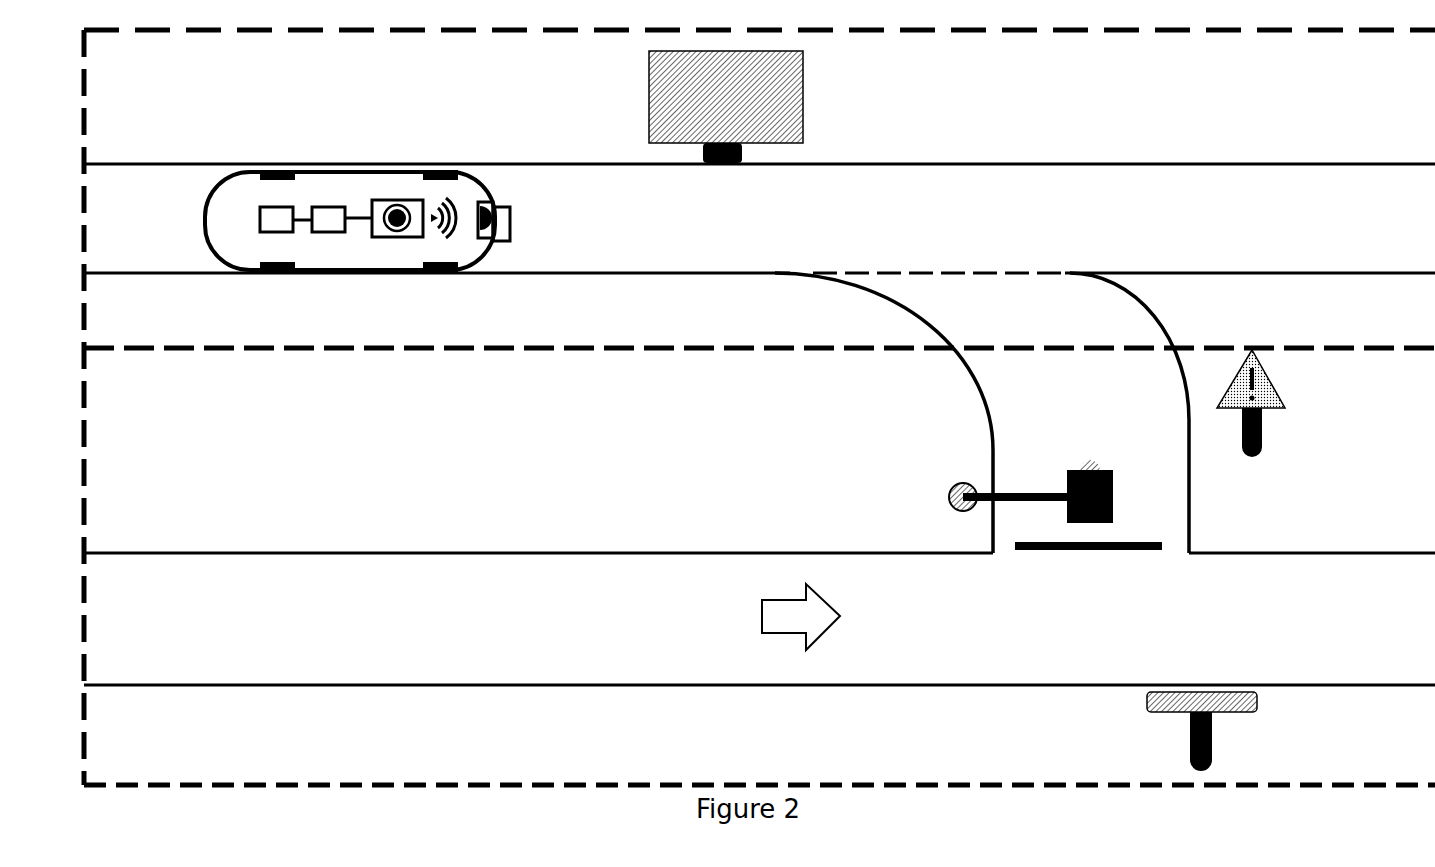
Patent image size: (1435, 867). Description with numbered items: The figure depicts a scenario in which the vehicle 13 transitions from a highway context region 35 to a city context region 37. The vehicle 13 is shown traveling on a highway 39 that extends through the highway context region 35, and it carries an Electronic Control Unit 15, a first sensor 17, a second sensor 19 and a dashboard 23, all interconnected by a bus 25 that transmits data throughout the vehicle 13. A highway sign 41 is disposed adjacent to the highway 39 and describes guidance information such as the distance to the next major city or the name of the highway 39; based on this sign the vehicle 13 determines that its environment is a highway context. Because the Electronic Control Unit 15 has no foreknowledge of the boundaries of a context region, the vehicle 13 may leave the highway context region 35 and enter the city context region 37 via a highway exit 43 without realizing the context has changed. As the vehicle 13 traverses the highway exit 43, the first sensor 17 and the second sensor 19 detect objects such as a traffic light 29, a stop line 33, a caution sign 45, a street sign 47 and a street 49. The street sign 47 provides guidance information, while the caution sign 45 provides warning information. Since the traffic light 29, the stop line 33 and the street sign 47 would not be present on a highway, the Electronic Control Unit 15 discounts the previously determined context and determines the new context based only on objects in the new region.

The vehicle 13 is at (205, 212).
The Electronic Control Unit 15 is at (268, 232).
The first sensor 17 is at (394, 200).
The second sensor 19 is at (510, 235).
The dashboard 23 is at (335, 232).
The bus 25 is at (303, 220).
The traffic light 29 is at (950, 490).
The stop line 33 is at (1145, 553).
The highway context region 35 is at (1267, 30).
The city context region 37 is at (152, 782).
The highway 39 is at (1155, 275).
The highway sign 41 is at (803, 116).
The highway exit 43 is at (963, 372).
The caution sign 45 is at (1262, 437).
The street sign 47 is at (1190, 740).
The street 49 is at (682, 686).